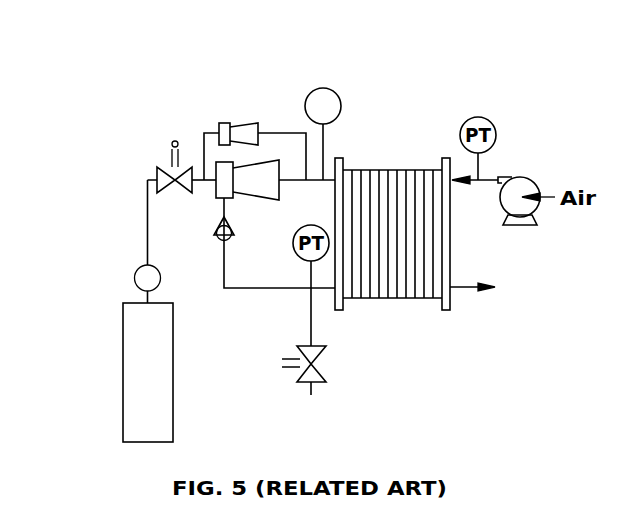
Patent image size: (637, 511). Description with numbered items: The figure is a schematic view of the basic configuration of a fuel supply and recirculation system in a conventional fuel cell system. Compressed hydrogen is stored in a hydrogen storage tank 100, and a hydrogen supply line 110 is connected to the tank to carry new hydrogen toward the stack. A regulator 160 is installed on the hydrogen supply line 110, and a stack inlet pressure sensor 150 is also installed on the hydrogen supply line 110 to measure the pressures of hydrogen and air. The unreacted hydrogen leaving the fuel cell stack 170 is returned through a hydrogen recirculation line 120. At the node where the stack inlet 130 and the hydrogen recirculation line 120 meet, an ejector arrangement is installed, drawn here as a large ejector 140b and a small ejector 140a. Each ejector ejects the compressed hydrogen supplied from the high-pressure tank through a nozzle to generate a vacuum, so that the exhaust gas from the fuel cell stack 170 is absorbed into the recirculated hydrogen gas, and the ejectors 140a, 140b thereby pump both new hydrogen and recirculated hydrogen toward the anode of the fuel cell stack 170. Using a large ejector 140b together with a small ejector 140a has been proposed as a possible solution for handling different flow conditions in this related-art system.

The hydrogen storage tank 100 is at (123, 380).
The hydrogen supply line 110 is at (148, 236).
The hydrogen recirculation line 120 is at (233, 290).
The stack inlet 130 is at (328, 180).
The small ejector 140a is at (263, 172).
The large ejector 140b is at (242, 123).
The stack inlet pressure sensor 150 is at (333, 91).
The regulator 160 is at (163, 167).
The fuel cell stack 170 is at (412, 292).